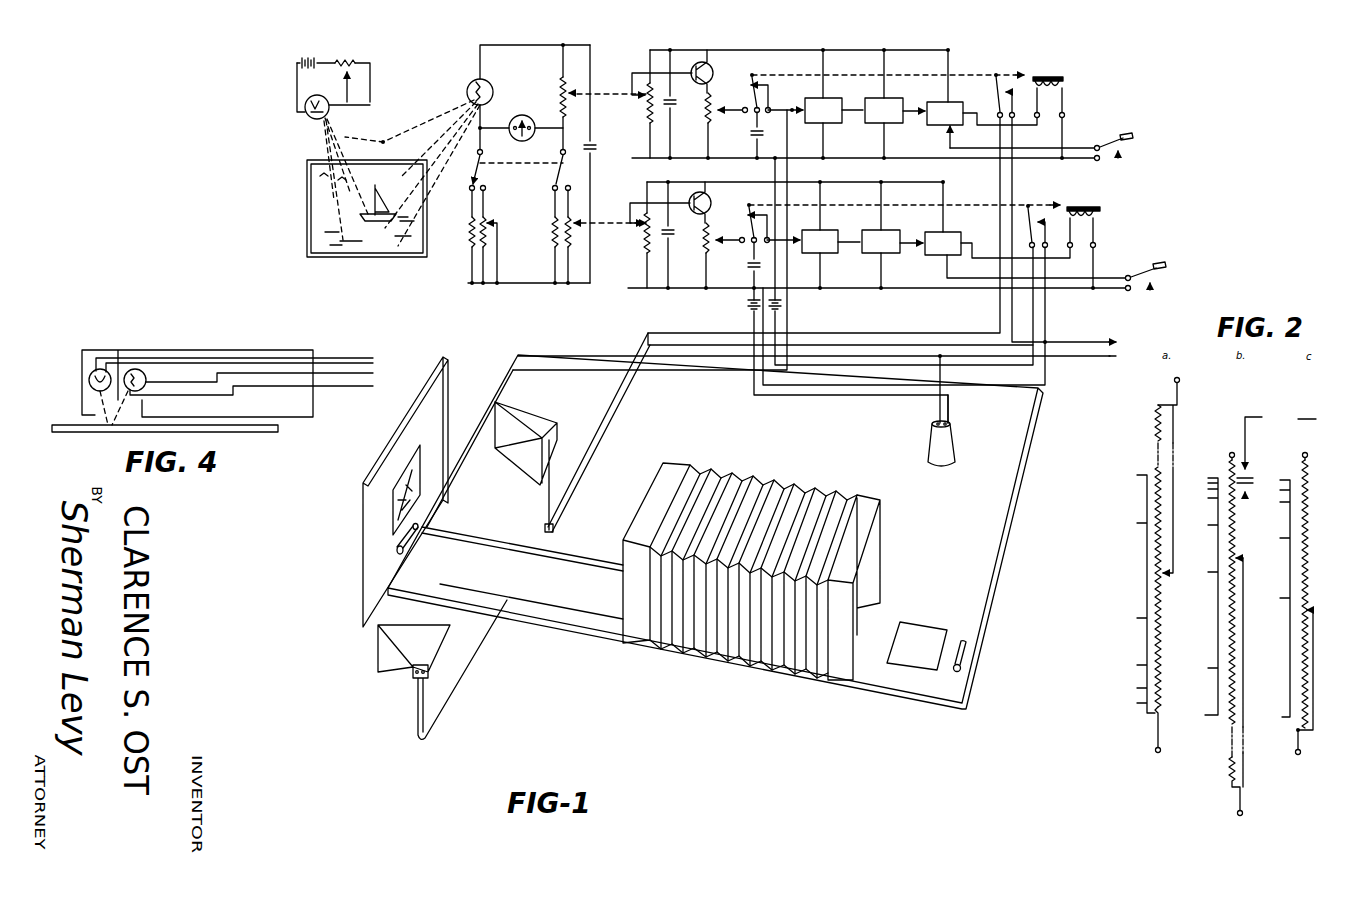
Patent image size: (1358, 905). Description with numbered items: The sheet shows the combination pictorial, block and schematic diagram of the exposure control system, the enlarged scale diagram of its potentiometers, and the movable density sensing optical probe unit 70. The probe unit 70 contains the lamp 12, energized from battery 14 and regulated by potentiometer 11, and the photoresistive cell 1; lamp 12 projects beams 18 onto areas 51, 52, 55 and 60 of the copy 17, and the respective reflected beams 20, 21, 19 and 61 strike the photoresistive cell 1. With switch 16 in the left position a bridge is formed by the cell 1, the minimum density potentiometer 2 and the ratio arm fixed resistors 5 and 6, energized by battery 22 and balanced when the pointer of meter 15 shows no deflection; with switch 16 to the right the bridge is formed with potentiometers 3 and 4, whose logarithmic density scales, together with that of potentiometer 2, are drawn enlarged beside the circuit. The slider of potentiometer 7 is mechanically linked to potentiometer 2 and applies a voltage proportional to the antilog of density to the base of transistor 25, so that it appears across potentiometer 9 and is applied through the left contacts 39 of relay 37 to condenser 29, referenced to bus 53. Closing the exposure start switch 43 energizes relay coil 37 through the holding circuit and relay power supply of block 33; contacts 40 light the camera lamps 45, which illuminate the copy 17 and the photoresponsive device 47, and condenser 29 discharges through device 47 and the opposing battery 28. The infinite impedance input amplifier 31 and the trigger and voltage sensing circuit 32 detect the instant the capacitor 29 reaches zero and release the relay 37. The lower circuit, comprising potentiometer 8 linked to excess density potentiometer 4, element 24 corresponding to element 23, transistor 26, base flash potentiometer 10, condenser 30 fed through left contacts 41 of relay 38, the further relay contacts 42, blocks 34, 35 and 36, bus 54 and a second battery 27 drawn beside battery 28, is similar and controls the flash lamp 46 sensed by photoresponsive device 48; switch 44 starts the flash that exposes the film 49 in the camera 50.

In FIG. 1, the photoresistive cell 1 is at (469, 84).
In FIG. 4, the photoresistive cell 1 is at (135, 369).
In FIG. 1, the minimum density potentiometer 2 is at (562, 114).
In FIG. 2, the minimum density potentiometer 2 is at (1141, 587).
In FIG. 1, the potentiometer 3 is at (488, 236).
In FIG. 2, the potentiometer 3 is at (1253, 632).
In FIG. 1, the excess density potentiometer 4 is at (572, 236).
In FIG. 2, the excess density potentiometer 4 is at (1288, 627).
In FIG. 1, the ratio arm fixed resistor 5 is at (465, 236).
In FIG. 1, the ratio arm fixed resistor 6 is at (549, 236).
In FIG. 1, the potentiometer 7 is at (662, 104).
In FIG. 1, the potentiometer 8 is at (660, 235).
In FIG. 1, the potentiometer 9 is at (724, 126).
In FIG. 1, the base flash potentiometer 10 is at (722, 256).
In FIG. 1, the potentiometer 11 is at (352, 74).
In FIG. 1, the lamp 12 is at (311, 117).
In FIG. 1, the battery 14 is at (300, 63).
In FIG. 1, the meter 15 is at (512, 118).
In FIG. 1, the switch 16 is at (506, 162).
In FIG. 1, the copy 17 is at (358, 347).
In FIG. 4, the copy 17 is at (66, 424).
In FIG. 1, the beams 18 is at (345, 142).
In FIG. 4, the beams 18 is at (98, 429).
In FIG. 1, the reflected beam 19 is at (404, 128).
In FIG. 1, the reflected beam 20 is at (413, 147).
In FIG. 1, the reflected beam 21 is at (416, 159).
In FIG. 4, the reflected beam 21 is at (89, 380).
In FIG. 1, the battery 22 is at (596, 164).
In FIG. 1, the element of top circuit 23 is at (676, 104).
In FIG. 1, the element of bottom circuit 24 is at (674, 235).
In FIG. 1, the transistor 25 is at (709, 70).
In FIG. 1, the transistor 26 is at (707, 200).
In FIG. 1, the battery 27 is at (748, 306).
In FIG. 1, the battery 28 is at (782, 308).
In FIG. 1, the condenser 29 is at (751, 136).
In FIG. 1, the condenser 30 is at (748, 266).
In FIG. 1, the input amplifier 31 is at (823, 104).
In FIG. 1, the trigger and voltage sensing circuit 32 is at (884, 104).
In FIG. 1, the holding circuit and relay power supply 33 is at (1011, 98).
In FIG. 1, the input amplifier of bottom circuit 34 is at (820, 235).
In FIG. 1, the trigger circuit of bottom circuit 35 is at (881, 235).
In FIG. 1, the holding circuit of bottom circuit 36 is at (1025, 229).
In FIG. 1, the relay coil 37 is at (1049, 118).
In FIG. 1, the relay 38 is at (1083, 248).
In FIG. 1, the left contacts 39 is at (757, 86).
In FIG. 1, the contacts 40 is at (1004, 69).
In FIG. 1, the left contacts 41 is at (755, 216).
In FIG. 1, the switch 42 is at (1038, 201).
In FIG. 1, the exposure start switch 43 is at (1125, 152).
In FIG. 1, the switch 44 is at (1158, 284).
In FIG. 1, the camera lamps 45 is at (538, 413).
In FIG. 1, the flash lamp 46 is at (949, 455).
In FIG. 1, the photoresponsive device 47 is at (405, 492).
In FIG. 1, the photoresponsive device 48 is at (956, 664).
In FIG. 1, the film 49 is at (917, 646).
In FIG. 1, the camera 50 is at (729, 663).
In FIG. 1, the minimum density area 51 is at (382, 178).
In FIG. 1, the maximum density area 52 is at (387, 224).
In FIG. 1, the bus 53 is at (638, 159).
In FIG. 1, the bus 54 is at (638, 290).
In FIG. 1, the area 55 is at (385, 147).
In FIG. 1, the intermediate density area 60 is at (376, 242).
In FIG. 1, the reflected beam 61 is at (442, 150).
In FIG. 4, the movable density sensing optical probe unit 70 is at (78, 351).